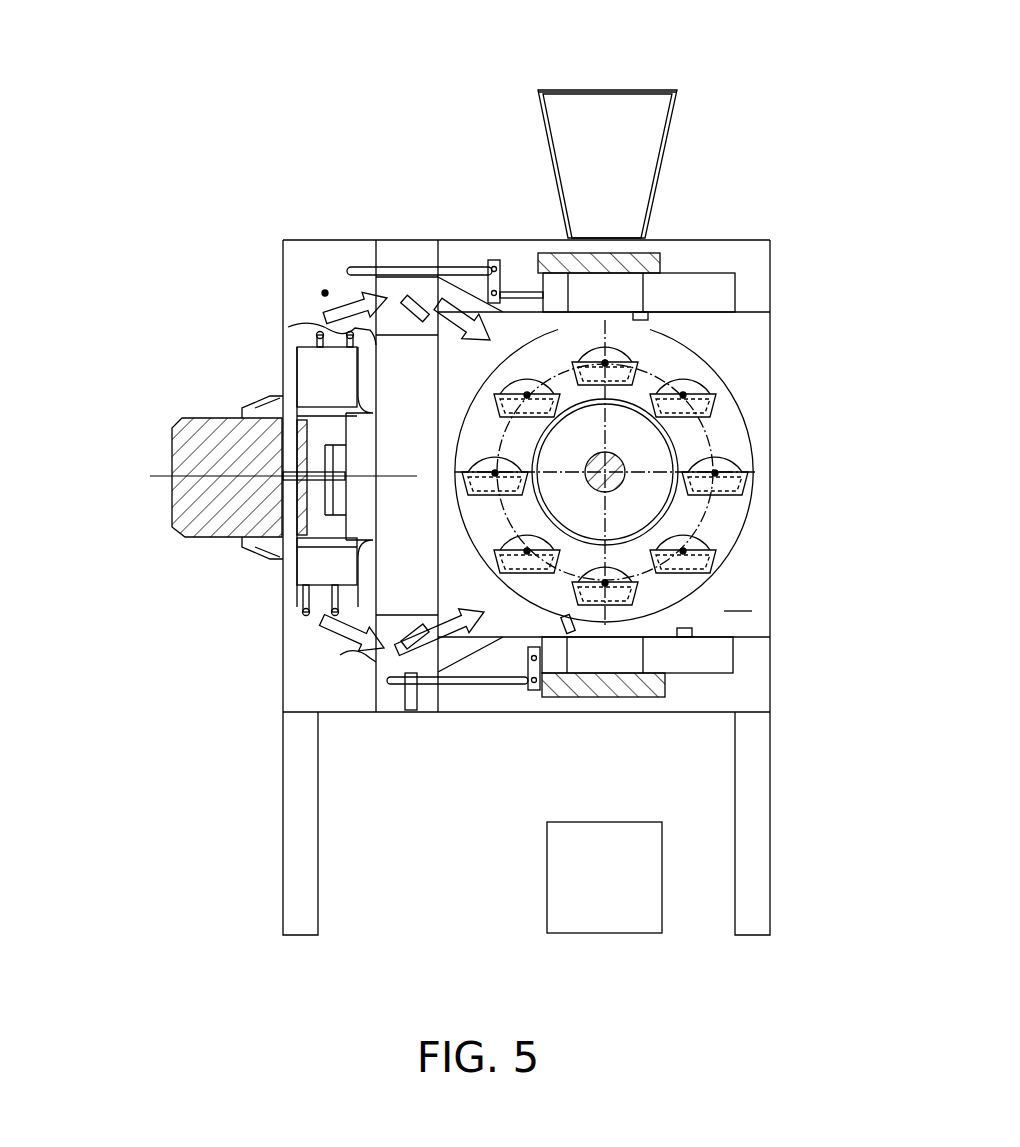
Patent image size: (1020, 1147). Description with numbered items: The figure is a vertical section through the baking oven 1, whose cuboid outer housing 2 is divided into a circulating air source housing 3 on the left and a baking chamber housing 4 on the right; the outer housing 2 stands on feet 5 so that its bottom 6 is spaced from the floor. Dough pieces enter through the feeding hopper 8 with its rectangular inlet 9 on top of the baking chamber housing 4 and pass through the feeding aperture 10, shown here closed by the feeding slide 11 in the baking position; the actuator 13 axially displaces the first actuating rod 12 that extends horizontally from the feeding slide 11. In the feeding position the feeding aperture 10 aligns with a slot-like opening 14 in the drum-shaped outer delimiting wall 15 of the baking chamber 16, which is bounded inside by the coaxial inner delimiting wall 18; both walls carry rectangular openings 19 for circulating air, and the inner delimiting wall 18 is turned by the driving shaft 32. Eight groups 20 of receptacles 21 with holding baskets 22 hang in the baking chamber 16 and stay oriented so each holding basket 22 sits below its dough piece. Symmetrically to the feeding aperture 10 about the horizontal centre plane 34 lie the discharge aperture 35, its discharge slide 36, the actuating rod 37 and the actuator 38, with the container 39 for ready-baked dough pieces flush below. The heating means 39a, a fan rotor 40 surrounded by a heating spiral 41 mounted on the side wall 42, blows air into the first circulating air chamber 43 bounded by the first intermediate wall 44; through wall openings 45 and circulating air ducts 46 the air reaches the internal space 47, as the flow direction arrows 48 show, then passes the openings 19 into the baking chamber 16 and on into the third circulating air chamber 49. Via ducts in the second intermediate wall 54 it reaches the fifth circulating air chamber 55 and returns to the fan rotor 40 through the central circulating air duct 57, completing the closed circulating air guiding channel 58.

The baking oven 1 is at (437, 145).
The outer housing 2 is at (780, 265).
The circulating air source housing 3 is at (345, 240).
The baking chamber housing 4 is at (755, 240).
The feet 5 is at (297, 885).
The bottom 6 is at (712, 712).
The feeding hopper 8 is at (563, 95).
The rectangular inlet 9 is at (664, 122).
The feeding aperture 10 is at (630, 288).
The feeding slide 11 is at (597, 262).
The first actuating rod 12 is at (447, 243).
The actuator 13 is at (390, 243).
The slot-like opening 14 is at (563, 330).
The outer delimiting wall 15 is at (686, 345).
The baking chamber 16 is at (748, 472).
The inner delimiting wall 18 is at (623, 460).
The rectangular openings 19 is at (640, 578).
The groups of receptacles 20 is at (730, 562).
The receptacles 21 is at (718, 413).
The holding baskets 22 is at (677, 440).
The driving shaft 32 is at (625, 470).
The horizontal centre plane 34 is at (150, 476).
The discharge aperture 35 is at (568, 655).
The discharge slide 36 is at (637, 688).
The actuating rod 37 is at (500, 682).
The actuator 38 is at (407, 660).
The container 39 is at (586, 900).
The heating means 39a is at (170, 444).
The fan rotor 40 is at (330, 365).
The heating spiral 41 is at (303, 612).
The side wall 42 is at (378, 688).
The first circulating air chamber 43 is at (325, 293).
The first intermediate wall 44 is at (373, 692).
The wall openings 45 is at (290, 327).
The circulating air ducts 46 is at (423, 668).
The internal space 47 is at (738, 596).
The flow direction arrows 48 is at (338, 316).
The third circulating air chamber 49 is at (620, 423).
The second intermediate wall 54 is at (437, 548).
The fifth circulating air chamber 55 is at (398, 578).
The circulating air duct 57 is at (364, 420).
The circulating air guiding channel 58 is at (318, 660).